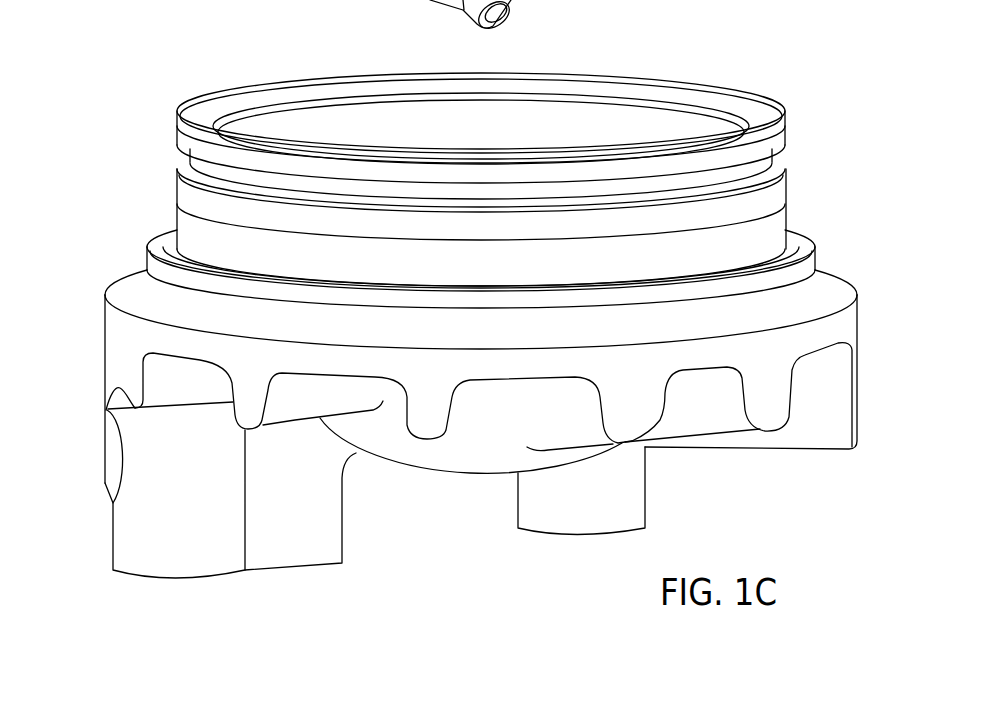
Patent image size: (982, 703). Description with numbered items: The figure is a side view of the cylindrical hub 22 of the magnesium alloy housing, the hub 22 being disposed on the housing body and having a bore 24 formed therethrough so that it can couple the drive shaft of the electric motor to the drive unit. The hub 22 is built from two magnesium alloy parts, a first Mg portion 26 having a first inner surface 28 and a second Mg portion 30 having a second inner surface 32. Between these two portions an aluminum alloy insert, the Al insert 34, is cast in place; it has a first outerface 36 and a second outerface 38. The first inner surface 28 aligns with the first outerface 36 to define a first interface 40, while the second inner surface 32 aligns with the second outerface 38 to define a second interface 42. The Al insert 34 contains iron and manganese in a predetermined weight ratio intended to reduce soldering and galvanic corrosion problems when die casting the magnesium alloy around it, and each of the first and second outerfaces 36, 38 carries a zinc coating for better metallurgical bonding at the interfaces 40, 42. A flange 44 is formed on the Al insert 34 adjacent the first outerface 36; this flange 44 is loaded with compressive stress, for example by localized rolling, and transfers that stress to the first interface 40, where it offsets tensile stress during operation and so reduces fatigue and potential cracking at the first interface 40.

The cylindrical hub 22 is at (183, 70).
The bore 24 is at (376, 131).
The first Mg portion 26 is at (186, 314).
The first inner surface 28 is at (133, 281).
The second Mg portion 30 is at (177, 186).
The second inner surface 32 is at (177, 197).
The Al insert 34 is at (600, 265).
The first outerface 36 is at (768, 284).
The second outerface 38 is at (737, 217).
The first interface 40 is at (818, 273).
The second interface 42 is at (788, 184).
The flange 44 is at (193, 267).